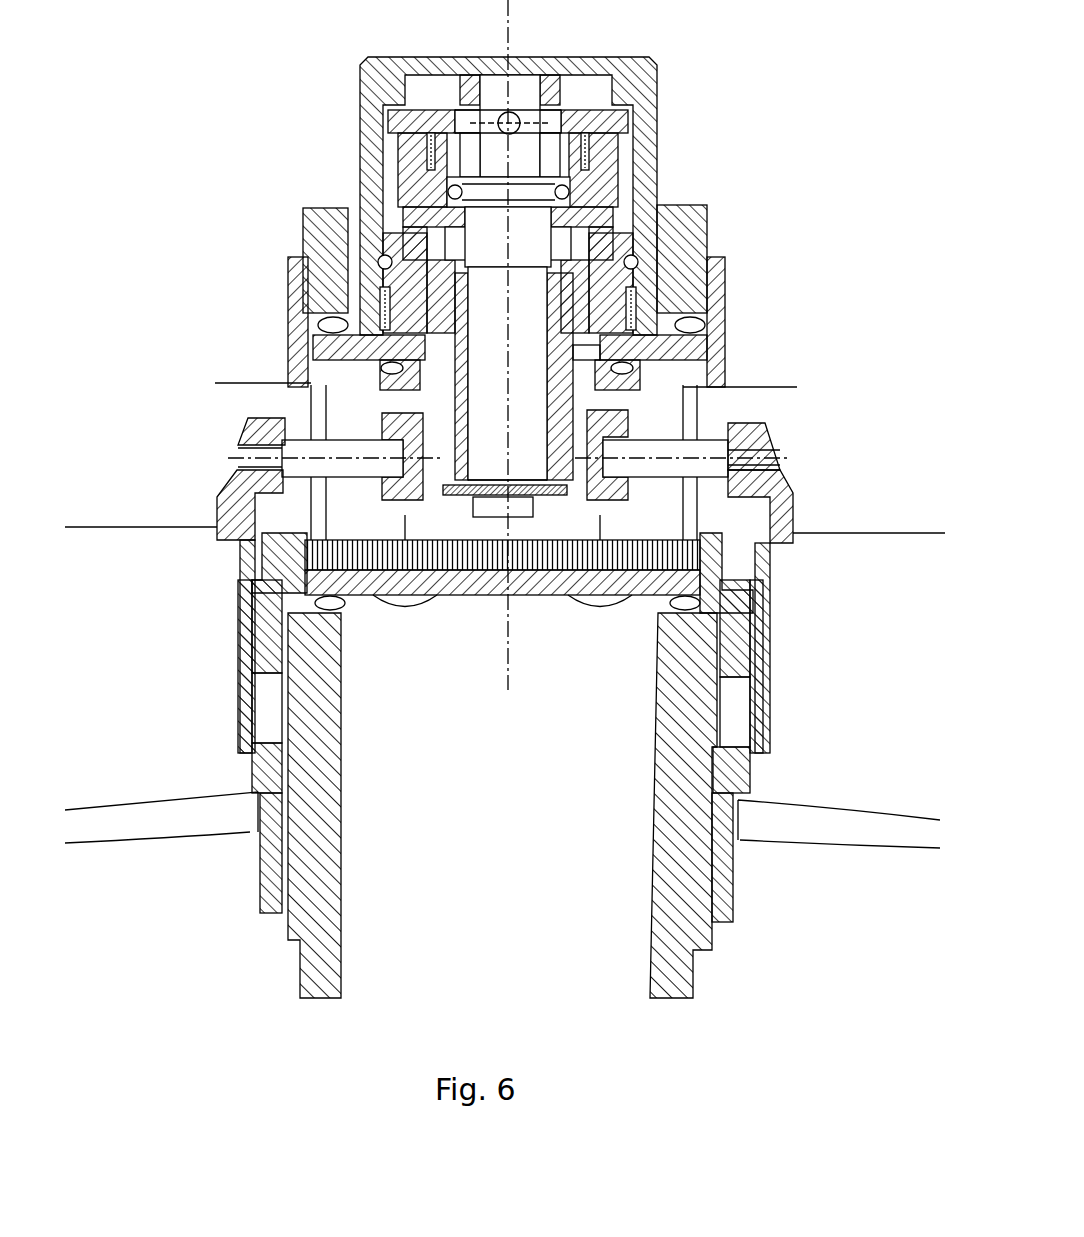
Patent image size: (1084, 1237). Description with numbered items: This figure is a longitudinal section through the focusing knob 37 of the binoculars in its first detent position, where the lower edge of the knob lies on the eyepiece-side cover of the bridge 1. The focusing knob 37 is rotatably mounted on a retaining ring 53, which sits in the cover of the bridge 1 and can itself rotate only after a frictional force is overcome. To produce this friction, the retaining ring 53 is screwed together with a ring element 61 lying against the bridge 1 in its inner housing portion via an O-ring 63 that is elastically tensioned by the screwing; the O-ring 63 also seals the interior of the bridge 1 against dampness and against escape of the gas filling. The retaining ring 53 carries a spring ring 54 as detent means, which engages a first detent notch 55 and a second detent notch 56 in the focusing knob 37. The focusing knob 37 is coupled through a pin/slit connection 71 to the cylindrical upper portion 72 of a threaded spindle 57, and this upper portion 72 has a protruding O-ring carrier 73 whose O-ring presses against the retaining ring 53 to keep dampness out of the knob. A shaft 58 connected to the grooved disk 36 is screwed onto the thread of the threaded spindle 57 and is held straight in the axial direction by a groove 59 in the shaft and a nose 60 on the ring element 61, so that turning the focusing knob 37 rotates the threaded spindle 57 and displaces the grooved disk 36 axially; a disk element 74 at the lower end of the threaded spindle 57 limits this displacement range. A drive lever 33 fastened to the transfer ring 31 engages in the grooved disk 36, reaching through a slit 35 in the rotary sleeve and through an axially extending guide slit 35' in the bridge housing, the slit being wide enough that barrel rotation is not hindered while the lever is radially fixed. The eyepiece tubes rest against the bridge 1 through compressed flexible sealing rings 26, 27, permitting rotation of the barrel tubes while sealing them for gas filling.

The bridge 1 is at (692, 348).
The sealing ring 26 is at (702, 326).
The sealing ring 27 is at (683, 613).
The transfer ring 31 is at (772, 438).
The drive lever 33 is at (703, 470).
The slit 35 is at (505, 585).
The guide slit 35' is at (490, 461).
The grooved disk 36 is at (610, 500).
The focusing knob 37 is at (628, 60).
The retaining ring 53 is at (658, 373).
The spring ring 54 is at (655, 245).
The first detent notch 55 is at (640, 262).
The second detent notch 56 is at (636, 320).
The threaded spindle 57 is at (507, 451).
The shaft 58 is at (527, 354).
The groove 59 is at (452, 395).
The nose 60 is at (450, 292).
The ring element 61 is at (582, 380).
The O-ring 63 is at (624, 375).
The pin/slit connection 71 is at (490, 152).
The cylindrical upper portion 72 is at (528, 96).
The O-ring carrier 73 is at (553, 191).
The disk element 74 is at (455, 496).